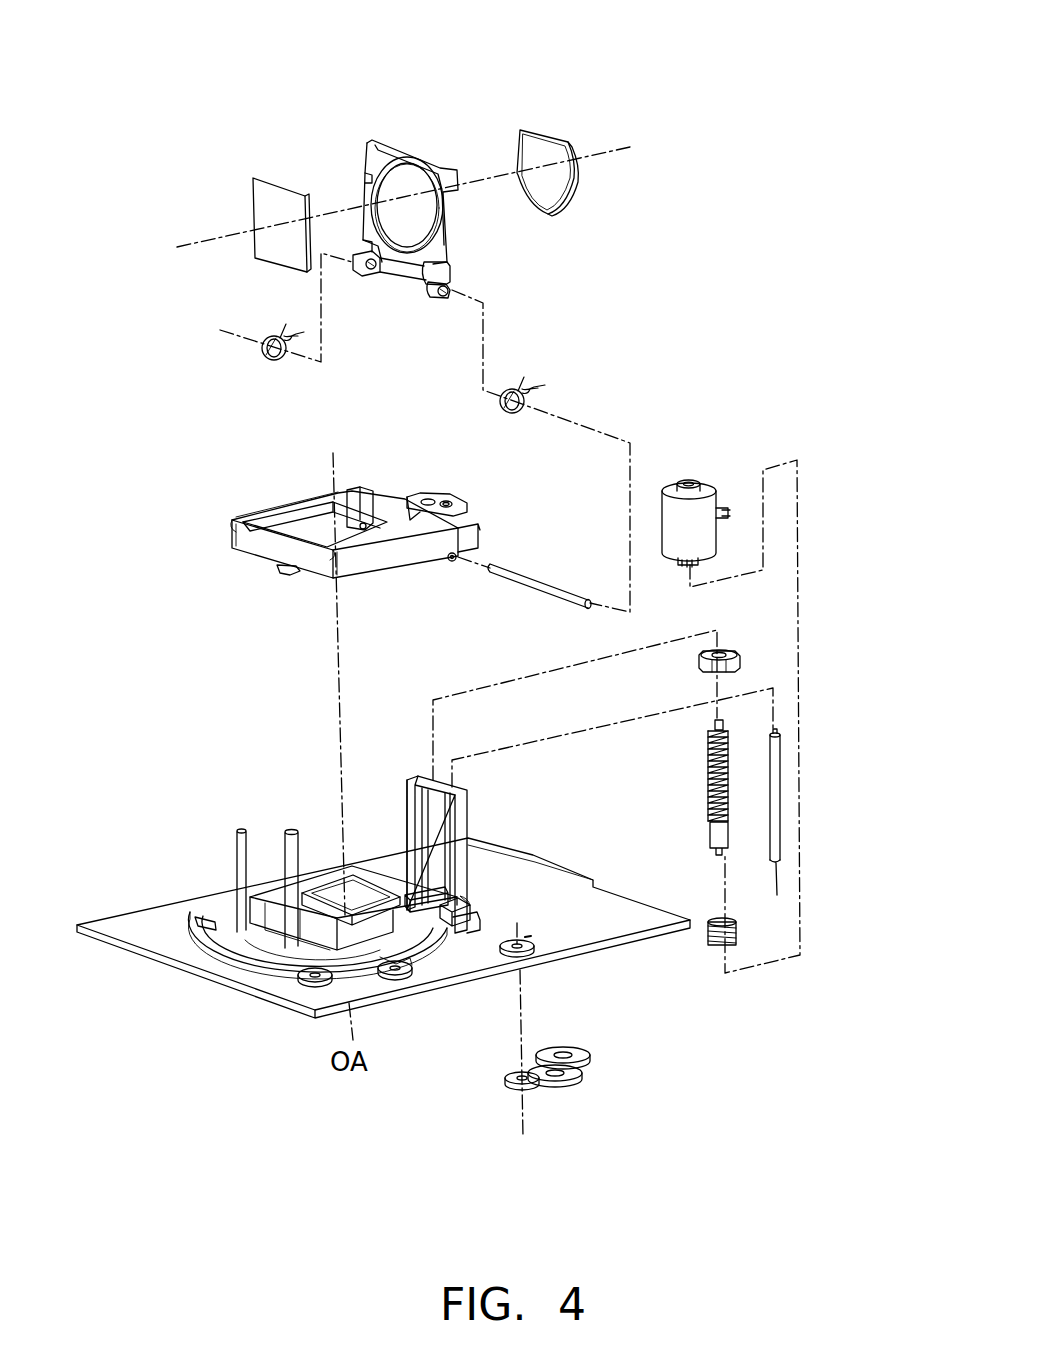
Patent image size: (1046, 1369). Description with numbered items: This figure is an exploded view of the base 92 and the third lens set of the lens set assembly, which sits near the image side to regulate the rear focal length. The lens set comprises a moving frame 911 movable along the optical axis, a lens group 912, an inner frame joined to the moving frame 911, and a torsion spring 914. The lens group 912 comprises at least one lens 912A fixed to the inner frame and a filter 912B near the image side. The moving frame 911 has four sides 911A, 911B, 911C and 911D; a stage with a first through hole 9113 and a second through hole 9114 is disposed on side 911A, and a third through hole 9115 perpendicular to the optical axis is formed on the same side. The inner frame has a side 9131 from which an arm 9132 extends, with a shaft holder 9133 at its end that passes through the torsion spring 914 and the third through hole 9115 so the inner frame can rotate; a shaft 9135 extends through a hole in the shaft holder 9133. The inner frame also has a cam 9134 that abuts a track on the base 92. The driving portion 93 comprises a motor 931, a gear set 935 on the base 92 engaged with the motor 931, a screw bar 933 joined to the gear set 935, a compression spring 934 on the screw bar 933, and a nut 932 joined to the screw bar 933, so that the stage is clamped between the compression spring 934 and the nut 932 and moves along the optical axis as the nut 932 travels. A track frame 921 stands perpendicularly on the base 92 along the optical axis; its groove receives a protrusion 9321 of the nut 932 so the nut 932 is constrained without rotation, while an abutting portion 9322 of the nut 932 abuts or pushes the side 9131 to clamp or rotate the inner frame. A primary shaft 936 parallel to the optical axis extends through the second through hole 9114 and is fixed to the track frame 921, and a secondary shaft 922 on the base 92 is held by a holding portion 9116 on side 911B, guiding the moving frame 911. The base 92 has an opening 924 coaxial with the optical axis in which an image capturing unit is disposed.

The lens group 912 is at (501, 50).
The lens 912A is at (530, 153).
The filter 912B is at (282, 182).
The side 9131 is at (437, 237).
The arm 9132 is at (357, 247).
The shaft holder 9133 is at (437, 290).
The cam 9134 is at (447, 270).
The torsion spring 914 is at (268, 352).
The moving frame 911 is at (230, 522).
The side 911A is at (472, 510).
The side 911B is at (240, 540).
The side 911C is at (343, 568).
The side 911D is at (281, 500).
The first through hole 9113 is at (423, 500).
The second through hole 9114 is at (448, 507).
The third through hole 9115 is at (450, 563).
The holding portion 9116 is at (282, 571).
The shaft 9135 is at (560, 592).
The base 92 is at (138, 906).
The track frame 921 is at (463, 807).
The secondary shaft 922 is at (290, 830).
The opening 924 is at (357, 893).
The driving portion 93 is at (868, 522).
The motor 931 is at (700, 535).
The nut 932 is at (730, 660).
The protrusion 9321 is at (700, 650).
The abutting portion 9322 is at (717, 683).
The screw bar 933 is at (730, 760).
The compression spring 934 is at (737, 937).
The gear set 935 is at (598, 1063).
The primary shaft 936 is at (780, 813).